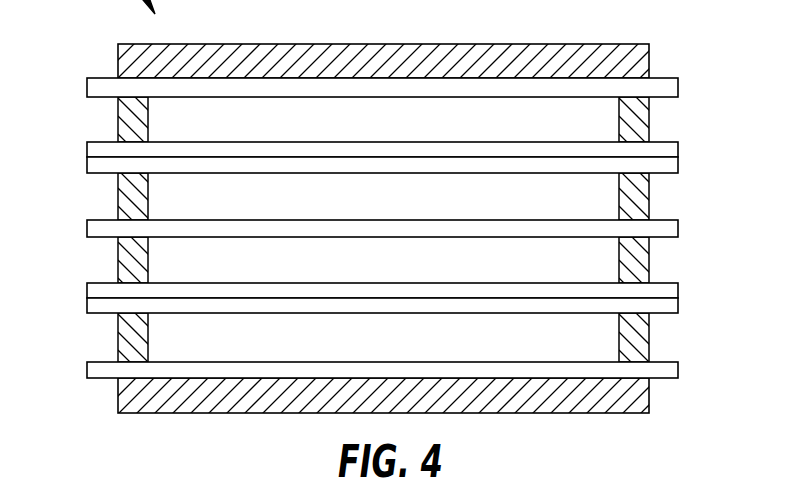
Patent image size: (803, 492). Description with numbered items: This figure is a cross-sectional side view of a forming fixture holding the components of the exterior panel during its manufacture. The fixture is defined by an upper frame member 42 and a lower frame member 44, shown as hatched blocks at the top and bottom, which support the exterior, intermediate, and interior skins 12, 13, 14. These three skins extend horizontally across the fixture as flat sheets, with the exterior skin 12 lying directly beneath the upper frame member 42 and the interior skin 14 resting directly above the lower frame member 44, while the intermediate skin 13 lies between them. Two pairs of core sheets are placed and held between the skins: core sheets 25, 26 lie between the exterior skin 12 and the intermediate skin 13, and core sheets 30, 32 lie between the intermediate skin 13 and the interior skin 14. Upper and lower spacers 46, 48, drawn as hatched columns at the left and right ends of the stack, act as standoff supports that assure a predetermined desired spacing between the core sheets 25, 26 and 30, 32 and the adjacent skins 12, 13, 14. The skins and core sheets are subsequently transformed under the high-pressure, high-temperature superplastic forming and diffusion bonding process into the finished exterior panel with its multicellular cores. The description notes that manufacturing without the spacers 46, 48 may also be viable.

The exterior skin 12 is at (680, 88).
The intermediate skin 13 is at (680, 229).
The interior skin 14 is at (680, 370).
The core sheet 25 is at (680, 150).
The core sheet 26 is at (680, 166).
The core sheet 30 is at (680, 291).
The core sheet 32 is at (680, 307).
The upper frame member 42 is at (533, 44).
The lower frame member 44 is at (540, 400).
The upper spacer 46 is at (116, 122).
The lower spacer 48 is at (116, 197).